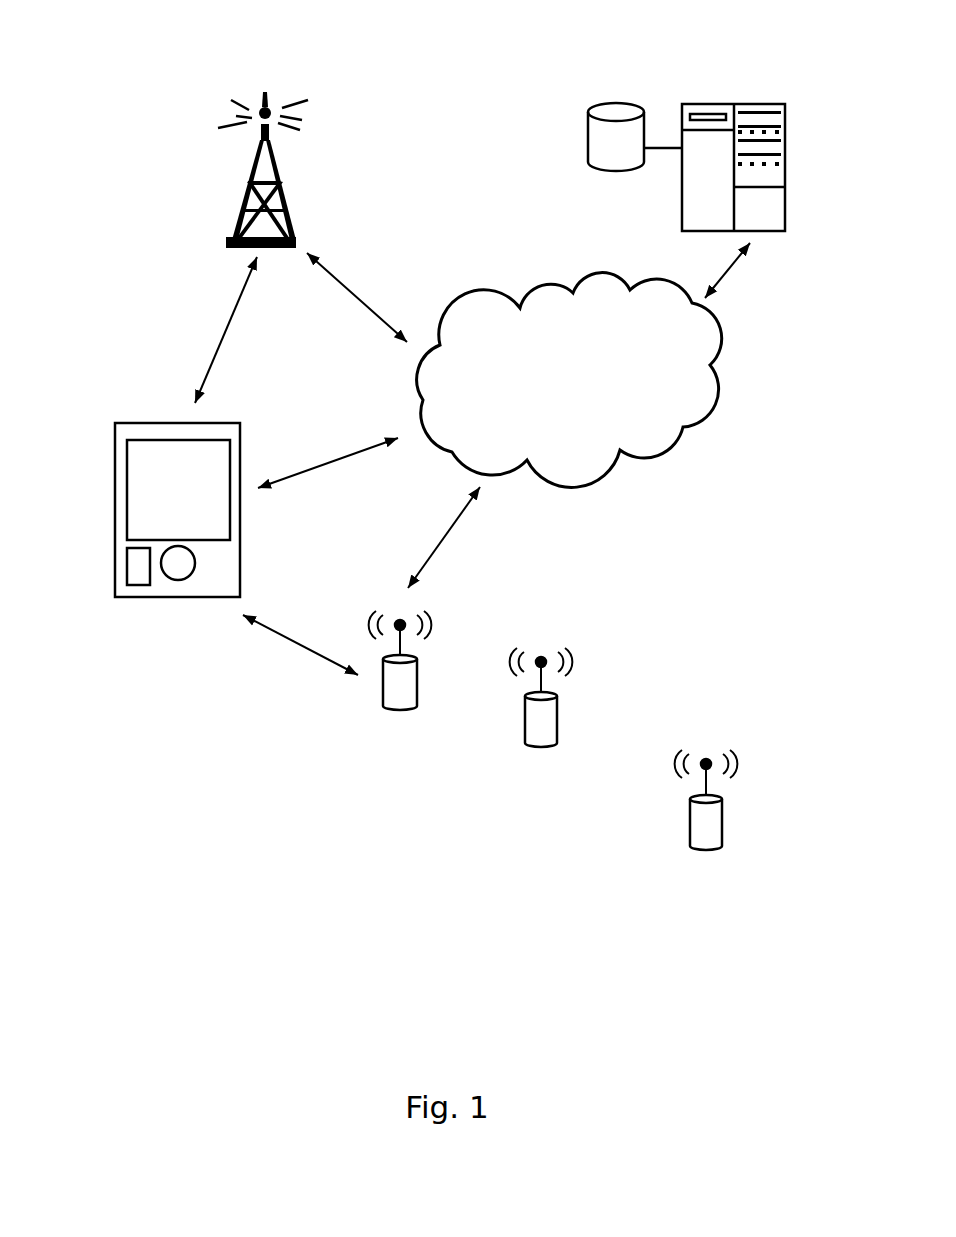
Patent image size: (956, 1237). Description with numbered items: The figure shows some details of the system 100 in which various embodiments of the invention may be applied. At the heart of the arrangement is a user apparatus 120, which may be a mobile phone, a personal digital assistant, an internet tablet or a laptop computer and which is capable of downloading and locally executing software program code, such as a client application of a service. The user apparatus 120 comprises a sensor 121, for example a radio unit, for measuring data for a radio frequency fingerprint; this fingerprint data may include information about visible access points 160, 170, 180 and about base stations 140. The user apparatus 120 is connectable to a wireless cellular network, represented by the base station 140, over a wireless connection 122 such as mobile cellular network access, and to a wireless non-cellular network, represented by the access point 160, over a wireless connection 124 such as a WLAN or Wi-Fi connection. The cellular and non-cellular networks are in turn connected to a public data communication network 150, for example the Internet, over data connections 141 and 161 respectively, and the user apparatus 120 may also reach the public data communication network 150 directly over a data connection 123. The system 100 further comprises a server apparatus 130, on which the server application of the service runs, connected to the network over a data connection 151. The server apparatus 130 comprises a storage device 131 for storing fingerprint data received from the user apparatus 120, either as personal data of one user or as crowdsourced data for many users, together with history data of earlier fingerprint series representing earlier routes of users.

The system 100 is at (193, 26).
The user apparatus 120 is at (241, 435).
The sensor 121 is at (138, 585).
The wireless connection 122 is at (230, 315).
The data connection 123 is at (320, 470).
The wireless connection 124 is at (278, 633).
The server apparatus 130 is at (722, 104).
The storage device 131 is at (612, 172).
The base station 140 is at (255, 163).
The data connection 141 is at (355, 292).
The public data communication network 150 is at (707, 420).
The data connection 151 is at (730, 270).
The access point 160 is at (398, 716).
The data connection 161 is at (448, 533).
The access point 170 is at (537, 752).
The access point 180 is at (706, 852).